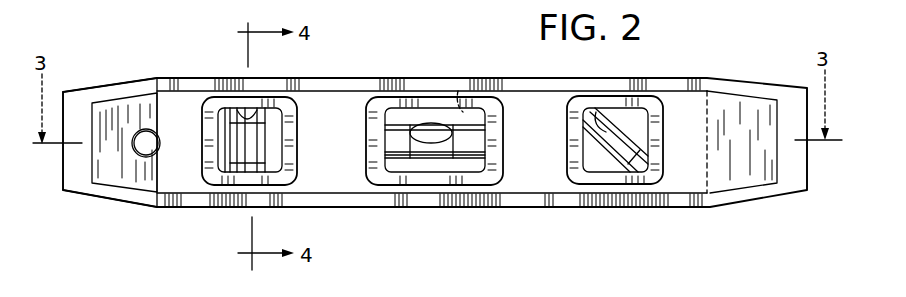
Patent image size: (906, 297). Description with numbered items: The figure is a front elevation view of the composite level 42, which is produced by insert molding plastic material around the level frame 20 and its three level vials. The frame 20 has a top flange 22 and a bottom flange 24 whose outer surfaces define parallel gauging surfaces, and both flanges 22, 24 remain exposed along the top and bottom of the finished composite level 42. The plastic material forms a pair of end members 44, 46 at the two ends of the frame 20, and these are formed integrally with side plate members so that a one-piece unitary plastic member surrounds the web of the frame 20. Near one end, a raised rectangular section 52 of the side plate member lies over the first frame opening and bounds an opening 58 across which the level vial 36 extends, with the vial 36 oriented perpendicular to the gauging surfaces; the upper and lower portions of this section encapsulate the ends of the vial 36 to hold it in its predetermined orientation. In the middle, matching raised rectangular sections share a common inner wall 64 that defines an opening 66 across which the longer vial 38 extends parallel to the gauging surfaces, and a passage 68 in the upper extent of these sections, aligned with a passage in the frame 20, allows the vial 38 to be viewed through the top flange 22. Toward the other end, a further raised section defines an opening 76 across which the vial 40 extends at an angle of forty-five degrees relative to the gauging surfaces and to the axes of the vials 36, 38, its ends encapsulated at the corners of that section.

The level frame 20 is at (668, 60).
The top flange 22 is at (318, 78).
The bottom flange 24 is at (368, 207).
The level vial 36 is at (266, 152).
The vial 38 is at (405, 127).
The vial 40 is at (618, 170).
The composite level 42 is at (110, 228).
The end member 44 is at (58, 168).
The end member 46 is at (816, 155).
The raised rectangular section 52 is at (218, 178).
The opening 58 is at (228, 128).
The common inner wall 64 is at (460, 167).
The opening 66 is at (438, 162).
The passage 68 is at (458, 91).
The opening 76 is at (602, 160).